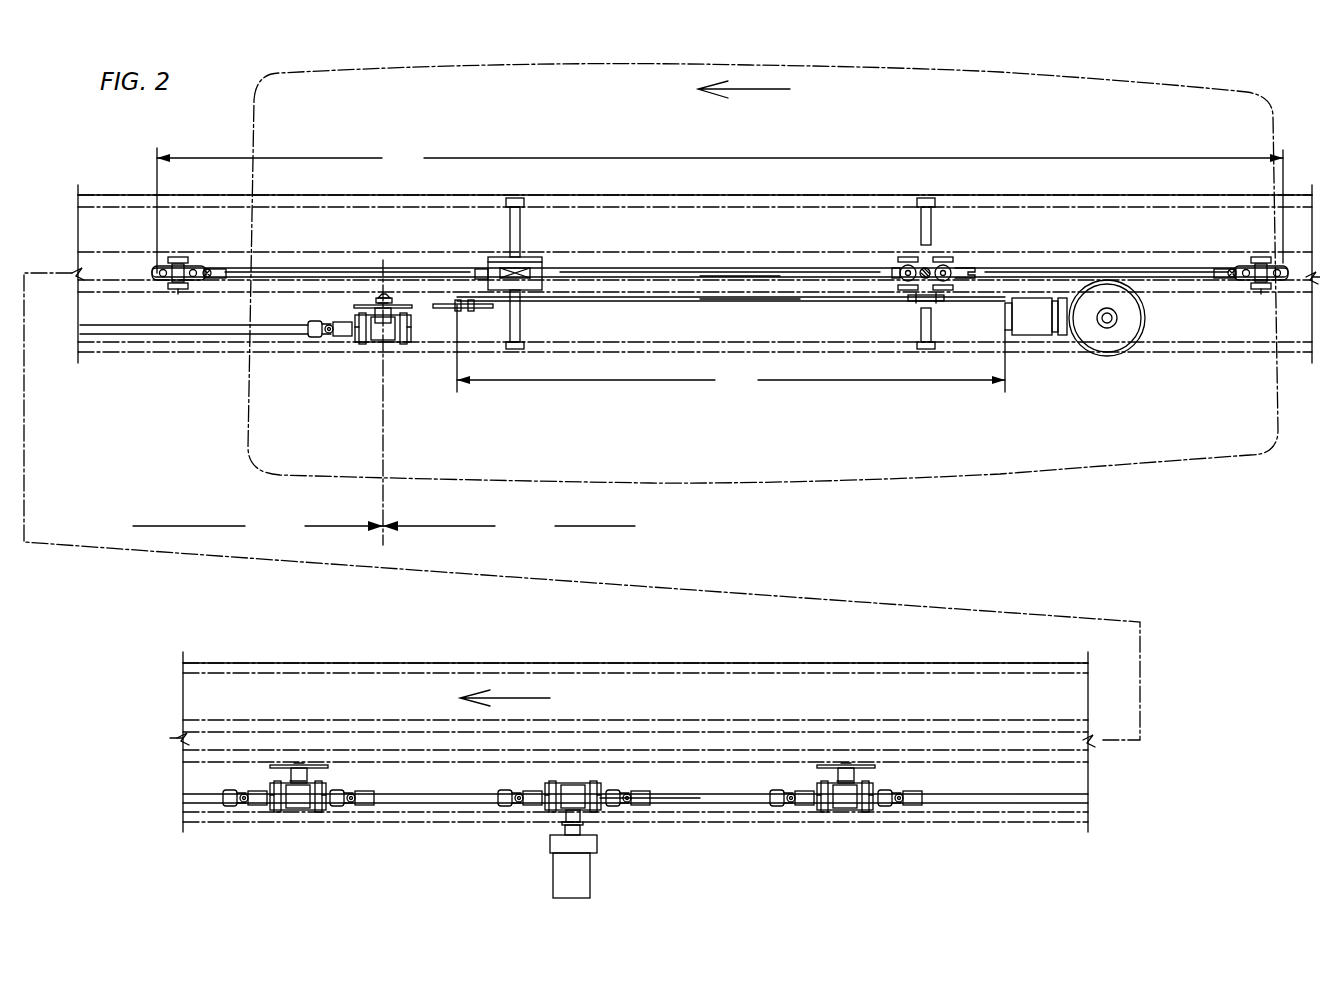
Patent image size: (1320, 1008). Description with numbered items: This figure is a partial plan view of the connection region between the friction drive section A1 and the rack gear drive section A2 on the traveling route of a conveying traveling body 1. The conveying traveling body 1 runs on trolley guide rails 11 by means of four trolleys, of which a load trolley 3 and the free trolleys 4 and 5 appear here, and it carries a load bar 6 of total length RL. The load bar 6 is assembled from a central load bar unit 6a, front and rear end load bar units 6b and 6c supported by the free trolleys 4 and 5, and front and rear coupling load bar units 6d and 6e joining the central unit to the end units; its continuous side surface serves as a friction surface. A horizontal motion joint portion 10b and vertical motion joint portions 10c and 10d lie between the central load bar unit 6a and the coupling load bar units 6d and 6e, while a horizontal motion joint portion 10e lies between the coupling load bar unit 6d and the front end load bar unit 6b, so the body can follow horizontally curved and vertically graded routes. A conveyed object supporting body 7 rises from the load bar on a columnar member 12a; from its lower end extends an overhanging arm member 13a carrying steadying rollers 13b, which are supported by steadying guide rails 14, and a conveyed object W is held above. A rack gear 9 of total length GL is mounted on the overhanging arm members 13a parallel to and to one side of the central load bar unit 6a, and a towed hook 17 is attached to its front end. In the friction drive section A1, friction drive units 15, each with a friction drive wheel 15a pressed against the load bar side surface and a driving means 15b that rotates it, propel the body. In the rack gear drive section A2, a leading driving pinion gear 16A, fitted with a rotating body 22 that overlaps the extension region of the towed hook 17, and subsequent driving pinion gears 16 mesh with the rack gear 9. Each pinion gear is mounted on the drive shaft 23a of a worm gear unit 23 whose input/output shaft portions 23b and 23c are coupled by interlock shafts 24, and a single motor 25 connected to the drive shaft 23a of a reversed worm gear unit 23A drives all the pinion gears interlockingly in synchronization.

The conveying traveling body 1 is at (731, 265).
The load trolley 3 is at (943, 260).
The free trolley 4 is at (178, 292).
The free trolley 5 is at (1262, 292).
The load bar 6 is at (697, 268).
The central load bar unit 6a is at (805, 267).
The front end load bar unit 6b is at (180, 256).
The rear end load bar unit 6c is at (1262, 256).
The front coupling load bar unit 6d is at (305, 267).
The rear coupling load bar unit 6e is at (1170, 267).
The conveyed object supporting body 7 is at (507, 260).
The rack gear 9 is at (838, 303).
The horizontal motion joint portion 10b is at (924, 264).
The vertical motion joint portion 10c is at (481, 266).
The vertical motion joint portion 10d is at (968, 266).
The horizontal motion joint portion 10e is at (208, 278).
The trolley guide rail 11 is at (742, 300).
The columnar member 12a is at (527, 268).
The overhanging arm member 13a is at (520, 226).
The steadying roller 13b is at (515, 197).
The steadying guide rail 14 is at (785, 195).
The friction drive unit 15 is at (1148, 320).
The friction drive wheel 15a is at (1105, 330).
The driving means 15b is at (1032, 308).
The driving pinion gear 16 is at (305, 765).
The leading driving pinion gear 16A is at (380, 302).
The towed hook 17 is at (446, 310).
The rotating body 22 is at (392, 298).
The worm gear unit 23 is at (383, 340).
The worm gear unit 23A is at (573, 782).
The drive shaft 23a is at (285, 781).
The input/output shaft portion 23b is at (525, 786).
The input/output shaft portion 23c is at (625, 786).
The interlock shaft 24 is at (225, 336).
The motor 25 is at (585, 872).
The total length of load bar RL is at (720, 208).
The total length of rack gear GL is at (731, 349).
The friction drive section A1 is at (509, 526).
The rack gear drive section A2 is at (258, 526).
The conveyed object W is at (1047, 462).